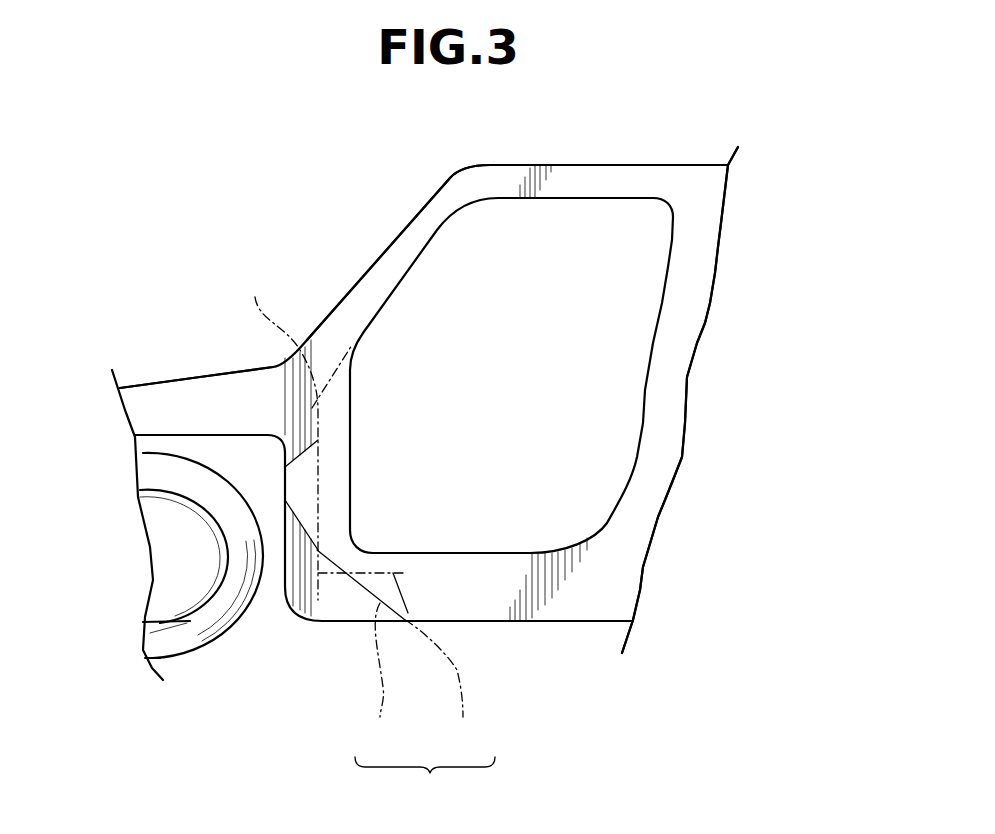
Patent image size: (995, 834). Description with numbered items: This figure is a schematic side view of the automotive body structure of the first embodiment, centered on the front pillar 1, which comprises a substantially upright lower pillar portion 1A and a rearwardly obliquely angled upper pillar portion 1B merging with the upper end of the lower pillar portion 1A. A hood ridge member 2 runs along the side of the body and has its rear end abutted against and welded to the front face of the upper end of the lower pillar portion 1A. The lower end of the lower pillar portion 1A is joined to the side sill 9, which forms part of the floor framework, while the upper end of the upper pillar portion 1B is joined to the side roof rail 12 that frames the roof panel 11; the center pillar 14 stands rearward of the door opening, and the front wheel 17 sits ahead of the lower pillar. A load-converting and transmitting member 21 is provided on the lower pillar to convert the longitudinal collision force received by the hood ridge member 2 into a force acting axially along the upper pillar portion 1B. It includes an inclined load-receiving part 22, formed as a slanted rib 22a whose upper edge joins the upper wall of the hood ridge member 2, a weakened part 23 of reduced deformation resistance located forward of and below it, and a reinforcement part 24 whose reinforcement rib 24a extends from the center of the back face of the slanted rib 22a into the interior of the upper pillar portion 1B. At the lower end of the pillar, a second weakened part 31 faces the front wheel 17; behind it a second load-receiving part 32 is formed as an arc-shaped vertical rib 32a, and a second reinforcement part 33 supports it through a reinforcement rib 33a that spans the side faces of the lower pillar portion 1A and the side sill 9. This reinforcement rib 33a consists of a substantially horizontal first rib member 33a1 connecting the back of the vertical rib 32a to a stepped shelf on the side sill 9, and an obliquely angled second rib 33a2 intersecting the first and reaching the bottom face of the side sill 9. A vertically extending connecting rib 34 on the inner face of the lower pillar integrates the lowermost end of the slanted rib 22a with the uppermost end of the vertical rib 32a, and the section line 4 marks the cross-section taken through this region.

The front pillar 1 is at (393, 233).
The lower pillar portion 1A is at (347, 500).
The upper pillar portion 1B is at (417, 260).
The hood ridge member 2 is at (140, 395).
The section line 4 is at (270, 407).
The side sill 9 is at (503, 553).
The roof panel 11 is at (671, 165).
The side roof rail 12 is at (578, 178).
The center pillar 14 is at (702, 275).
The front wheel 17 is at (190, 650).
The load-converting and transmitting member 21 is at (325, 358).
The load-receiving part 22 is at (307, 322).
The slanted rib 22a is at (260, 433).
The weakened part 23 is at (292, 388).
The reinforcement part 24 is at (365, 368).
The reinforcement rib 24a is at (352, 345).
The second weakened part 31 is at (293, 590).
The second load-receiving part 32 is at (352, 630).
The vertical rib 32a is at (323, 600).
The second reinforcement part 33 is at (407, 593).
The reinforcement rib 33a is at (425, 784).
The first rib member 33a1 is at (387, 679).
The second obliquely angled rib 33a2 is at (457, 688).
The connecting rib 34 is at (317, 452).